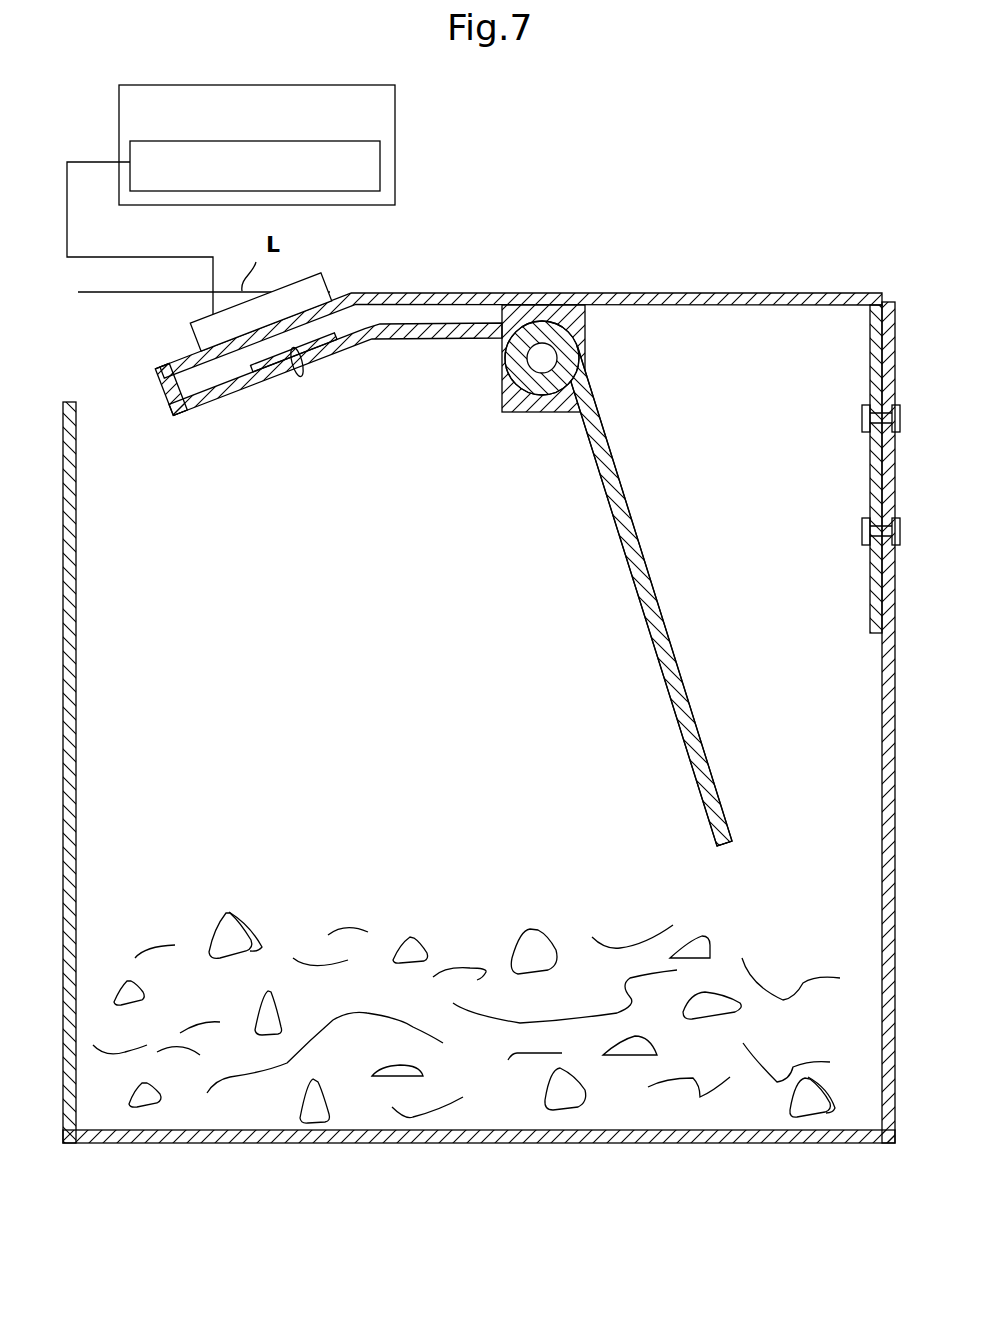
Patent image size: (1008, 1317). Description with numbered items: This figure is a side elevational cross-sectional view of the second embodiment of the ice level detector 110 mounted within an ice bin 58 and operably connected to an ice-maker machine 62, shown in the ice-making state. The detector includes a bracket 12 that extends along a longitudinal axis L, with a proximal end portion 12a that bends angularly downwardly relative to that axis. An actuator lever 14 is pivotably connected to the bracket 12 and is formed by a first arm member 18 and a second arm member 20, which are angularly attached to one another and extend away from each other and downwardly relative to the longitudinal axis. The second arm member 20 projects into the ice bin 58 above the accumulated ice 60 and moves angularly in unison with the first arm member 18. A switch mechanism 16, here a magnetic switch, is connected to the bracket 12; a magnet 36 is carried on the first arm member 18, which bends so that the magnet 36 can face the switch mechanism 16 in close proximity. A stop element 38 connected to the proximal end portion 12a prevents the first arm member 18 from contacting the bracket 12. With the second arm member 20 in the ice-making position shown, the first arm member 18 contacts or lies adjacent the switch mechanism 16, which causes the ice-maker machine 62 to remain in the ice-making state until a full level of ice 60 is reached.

The bracket 12 is at (634, 290).
The proximal end portion of the bracket 12a is at (158, 375).
The actuator lever 14 is at (662, 607).
The switch mechanism 16 is at (190, 345).
The first arm member 18 is at (224, 398).
The second arm member 20 is at (701, 791).
The magnet 36 is at (302, 368).
The stop element 38 is at (166, 415).
The ice bin 58 is at (883, 938).
The ice 60 is at (412, 933).
The ice-maker machine 62 is at (395, 173).
The ice level detector 110 is at (678, 498).